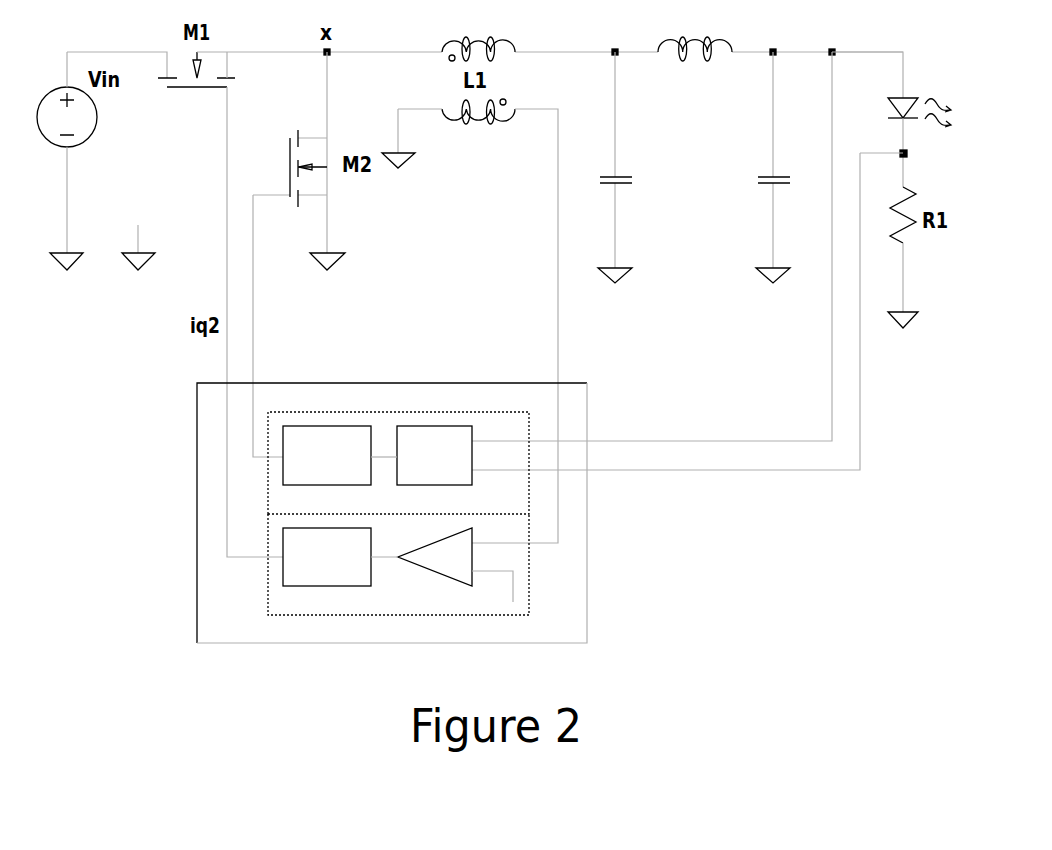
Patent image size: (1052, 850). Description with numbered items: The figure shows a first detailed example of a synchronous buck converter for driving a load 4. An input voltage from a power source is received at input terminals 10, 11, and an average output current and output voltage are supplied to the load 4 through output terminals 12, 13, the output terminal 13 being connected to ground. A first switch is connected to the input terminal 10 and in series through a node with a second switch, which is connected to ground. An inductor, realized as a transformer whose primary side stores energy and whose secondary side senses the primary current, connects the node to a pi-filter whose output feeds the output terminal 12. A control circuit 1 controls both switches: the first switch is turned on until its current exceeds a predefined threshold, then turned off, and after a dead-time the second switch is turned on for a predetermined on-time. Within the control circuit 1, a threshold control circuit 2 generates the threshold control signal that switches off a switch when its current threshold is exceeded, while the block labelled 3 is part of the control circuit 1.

The control circuit 1 is at (392, 500).
The threshold control circuit 2 is at (398, 578).
The control circuit blocks 3 is at (398, 451).
The load 4 is at (909, 141).
The input terminal 10 is at (117, 52).
The input terminal 11 is at (138, 235).
The output terminal 12 is at (867, 62).
The output terminal 13 is at (897, 285).